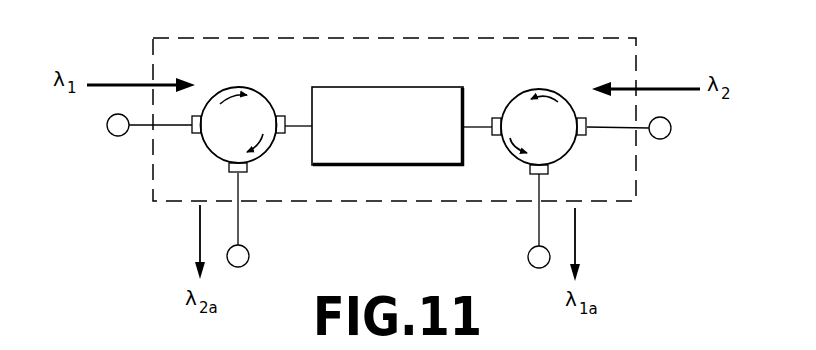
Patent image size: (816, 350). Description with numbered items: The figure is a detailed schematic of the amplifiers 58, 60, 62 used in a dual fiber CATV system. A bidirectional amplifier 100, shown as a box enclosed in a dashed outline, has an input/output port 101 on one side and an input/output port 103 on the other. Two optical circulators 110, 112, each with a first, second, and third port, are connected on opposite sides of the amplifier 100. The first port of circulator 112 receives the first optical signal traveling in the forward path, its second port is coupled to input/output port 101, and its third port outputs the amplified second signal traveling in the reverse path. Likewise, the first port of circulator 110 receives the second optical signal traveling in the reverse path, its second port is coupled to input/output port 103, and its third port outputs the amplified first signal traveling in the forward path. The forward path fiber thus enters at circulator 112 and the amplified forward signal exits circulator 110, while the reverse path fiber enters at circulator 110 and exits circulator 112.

The amplifier 58 is at (422, 101).
The amplifier 60 is at (422, 101).
The amplifier 62 is at (550, 40).
The amplifier 100 is at (425, 87).
The input/output port 101 is at (289, 128).
The input/output port 103 is at (472, 128).
The optical circulator 110 is at (555, 92).
The optical circulator 112 is at (254, 88).